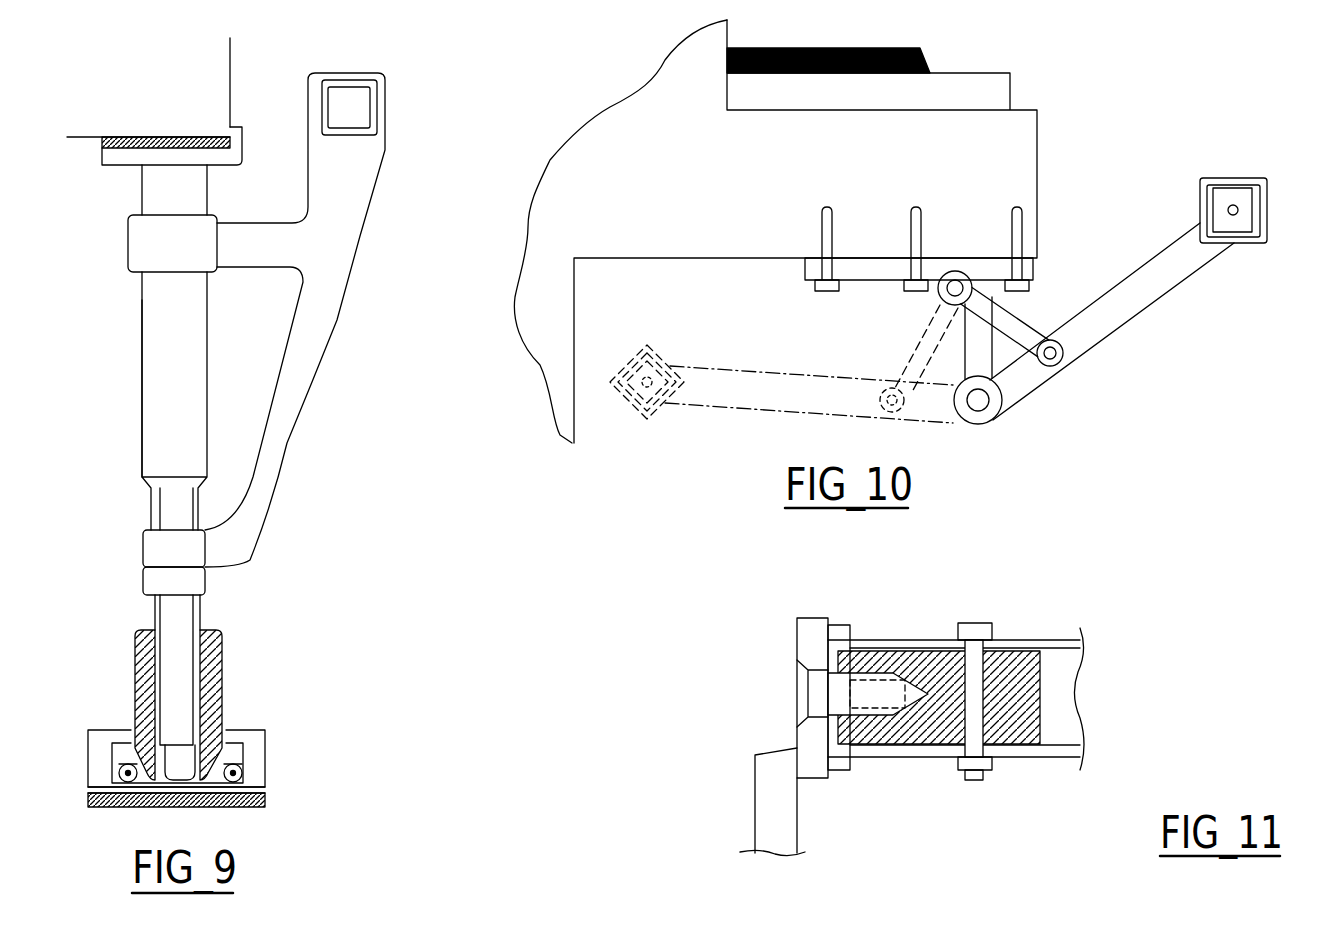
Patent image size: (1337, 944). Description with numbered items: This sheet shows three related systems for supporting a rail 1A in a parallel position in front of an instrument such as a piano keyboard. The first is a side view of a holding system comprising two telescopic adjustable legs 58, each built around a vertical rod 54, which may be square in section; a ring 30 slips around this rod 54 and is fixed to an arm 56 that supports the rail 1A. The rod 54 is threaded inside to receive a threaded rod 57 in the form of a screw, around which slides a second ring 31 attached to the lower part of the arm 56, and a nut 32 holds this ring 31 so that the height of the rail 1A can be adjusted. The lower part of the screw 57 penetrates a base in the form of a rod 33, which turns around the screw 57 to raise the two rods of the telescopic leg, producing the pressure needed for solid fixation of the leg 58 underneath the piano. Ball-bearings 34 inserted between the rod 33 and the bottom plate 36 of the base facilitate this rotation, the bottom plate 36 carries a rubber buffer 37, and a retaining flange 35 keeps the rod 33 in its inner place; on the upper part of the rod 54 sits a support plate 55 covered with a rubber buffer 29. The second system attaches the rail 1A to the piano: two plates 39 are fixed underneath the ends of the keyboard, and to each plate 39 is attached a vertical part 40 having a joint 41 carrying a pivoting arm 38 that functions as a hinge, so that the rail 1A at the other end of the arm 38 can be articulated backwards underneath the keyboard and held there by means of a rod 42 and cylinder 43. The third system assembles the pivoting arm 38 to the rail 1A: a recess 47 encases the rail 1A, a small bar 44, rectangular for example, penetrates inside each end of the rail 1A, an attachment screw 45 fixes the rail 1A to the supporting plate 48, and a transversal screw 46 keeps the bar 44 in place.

In FIG. 10, the rail 1A is at (1262, 210).
In FIG. 11, the rail 1A is at (1052, 760).
In FIG. 9, the rubber buffer 29 is at (122, 137).
In FIG. 9, the ring 30 is at (150, 246).
In FIG. 9, the ring 31 is at (163, 548).
In FIG. 9, the nut 32 is at (195, 583).
In FIG. 9, the rod 33 is at (220, 658).
In FIG. 9, the ball-bearings 34 is at (236, 775).
In FIG. 9, the retaining flange 35 is at (93, 748).
In FIG. 9, the bottom plate 36 is at (100, 797).
In FIG. 9, the rubber buffer 37 is at (255, 810).
In FIG. 10, the pivoting arm 38 is at (1163, 283).
In FIG. 11, the pivoting arm 38 is at (765, 803).
In FIG. 10, the plates 39 is at (990, 268).
In FIG. 10, the vertical part 40 is at (982, 350).
In FIG. 10, the joint 41 is at (982, 402).
In FIG. 10, the rod 42 is at (1010, 318).
In FIG. 10, the cylinder 43 is at (1063, 357).
In FIG. 11, the small bar 44 is at (1002, 720).
In FIG. 11, the attachment screw 45 is at (870, 695).
In FIG. 11, the transversal screw 46 is at (980, 678).
In FIG. 9, the recess 47 is at (350, 105).
In FIG. 10, the recess 47 is at (1240, 185).
In FIG. 11, the recess 47 is at (843, 630).
In FIG. 10, the supporting plate 48 is at (1202, 200).
In FIG. 11, the supporting plate 48 is at (805, 640).
In FIG. 9, the rod 54 is at (165, 353).
In FIG. 9, the support plate 55 is at (115, 157).
In FIG. 9, the arm 56 is at (343, 225).
In FIG. 9, the threaded rod 57 is at (172, 615).
In FIG. 9, the telescopic adjustable legs 58 is at (138, 430).